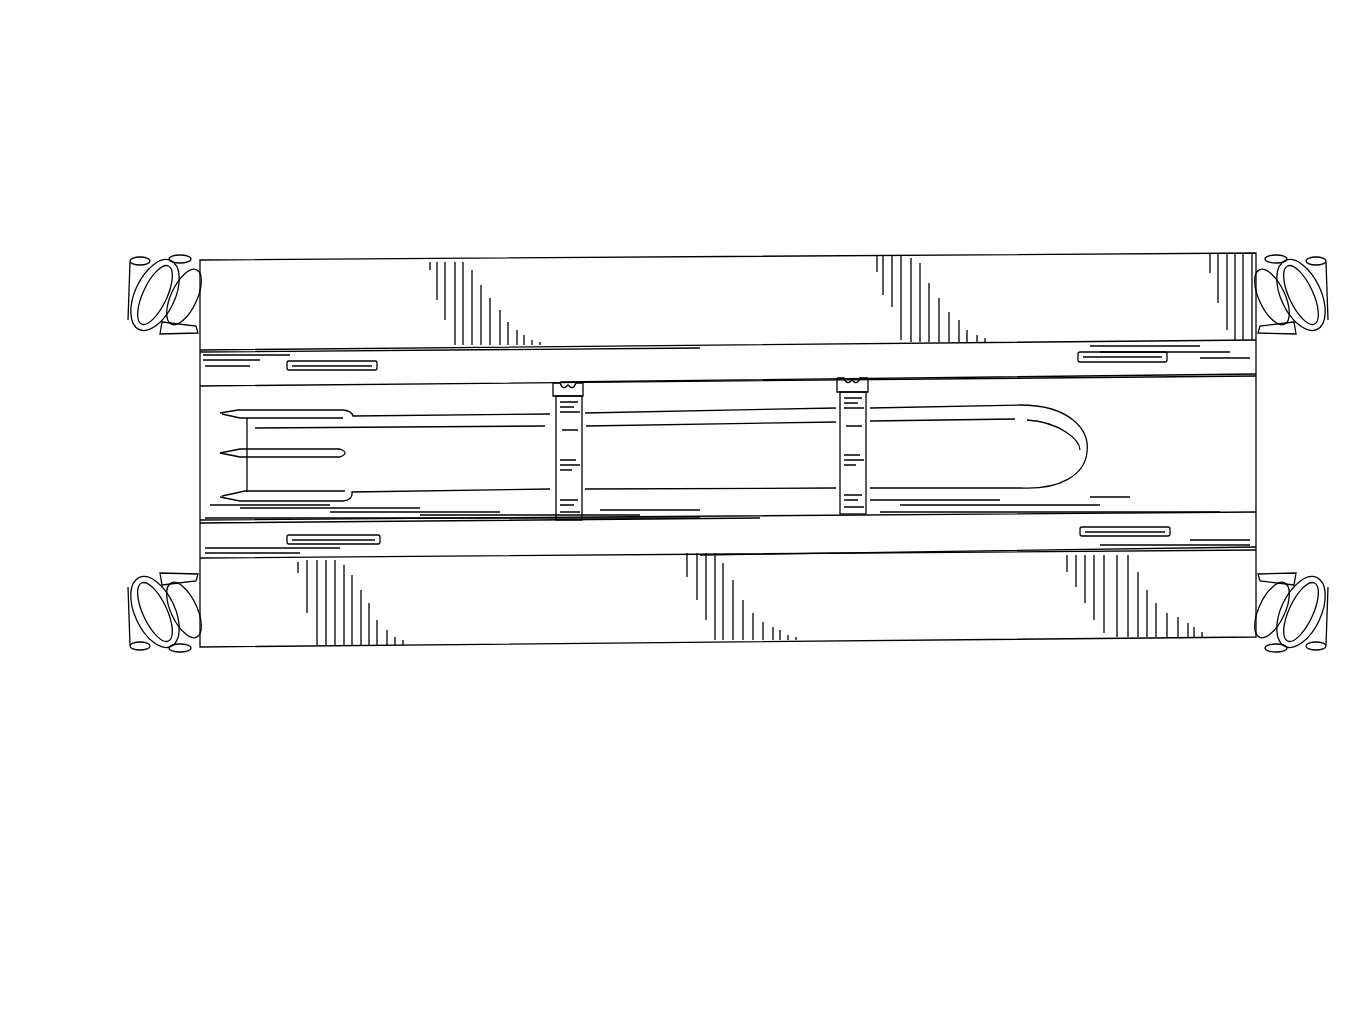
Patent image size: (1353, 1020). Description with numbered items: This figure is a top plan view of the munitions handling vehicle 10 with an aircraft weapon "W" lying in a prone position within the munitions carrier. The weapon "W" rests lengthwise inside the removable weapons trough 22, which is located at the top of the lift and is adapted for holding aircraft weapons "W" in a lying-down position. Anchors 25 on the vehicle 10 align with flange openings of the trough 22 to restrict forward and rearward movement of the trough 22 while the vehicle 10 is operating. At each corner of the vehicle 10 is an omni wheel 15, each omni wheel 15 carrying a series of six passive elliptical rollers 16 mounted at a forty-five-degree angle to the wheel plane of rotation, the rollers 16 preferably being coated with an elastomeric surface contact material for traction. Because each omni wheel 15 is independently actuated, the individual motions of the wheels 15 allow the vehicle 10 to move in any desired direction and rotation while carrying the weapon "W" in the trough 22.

The vehicle 10 is at (380, 203).
The omni wheel 15 is at (1277, 253).
The passive elliptical rollers 16 is at (1308, 305).
The weapons trough 22 is at (1198, 408).
The anchors 25 is at (1116, 362).
The aircraft weapon W is at (686, 450).